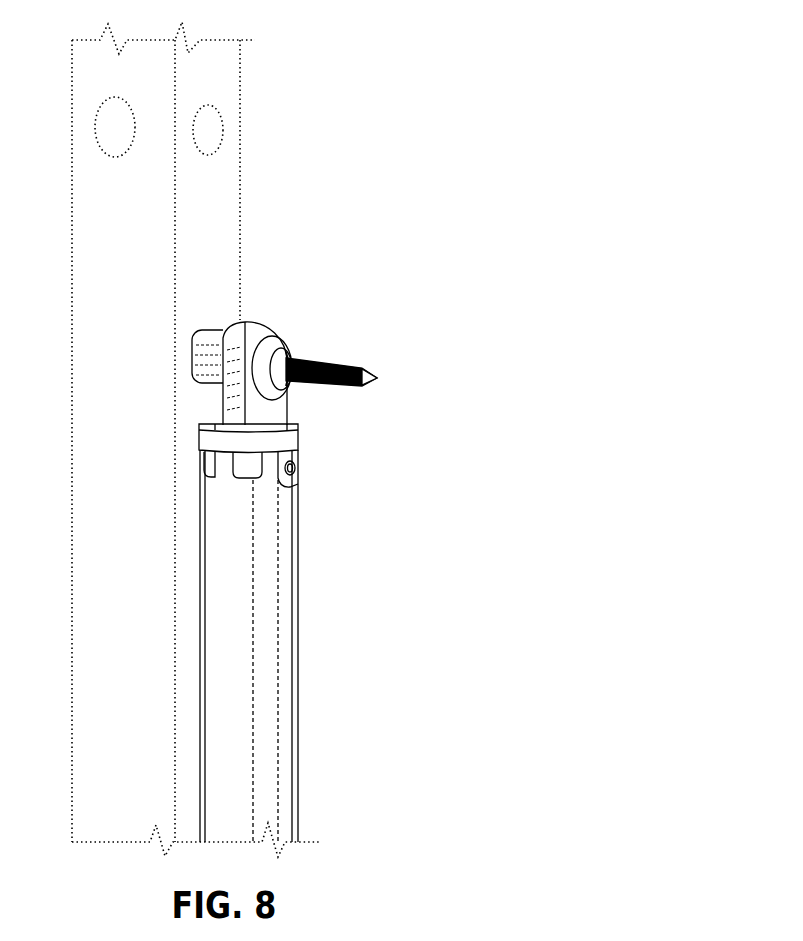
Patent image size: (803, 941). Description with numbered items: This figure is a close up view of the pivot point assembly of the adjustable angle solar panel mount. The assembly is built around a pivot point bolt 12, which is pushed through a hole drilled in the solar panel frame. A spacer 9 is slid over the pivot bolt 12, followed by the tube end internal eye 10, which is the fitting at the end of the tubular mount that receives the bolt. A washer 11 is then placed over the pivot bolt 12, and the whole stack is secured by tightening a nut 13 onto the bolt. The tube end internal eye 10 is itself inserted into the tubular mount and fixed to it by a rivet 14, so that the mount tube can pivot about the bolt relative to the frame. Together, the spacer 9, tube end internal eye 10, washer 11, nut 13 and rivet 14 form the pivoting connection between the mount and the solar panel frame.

The spacer 9 is at (211, 324).
The tube end internal eye 10 is at (254, 311).
The washer 11 is at (287, 323).
The pivot point bolt 12 is at (371, 358).
The nut 13 is at (303, 338).
The rivet 14 is at (311, 467).